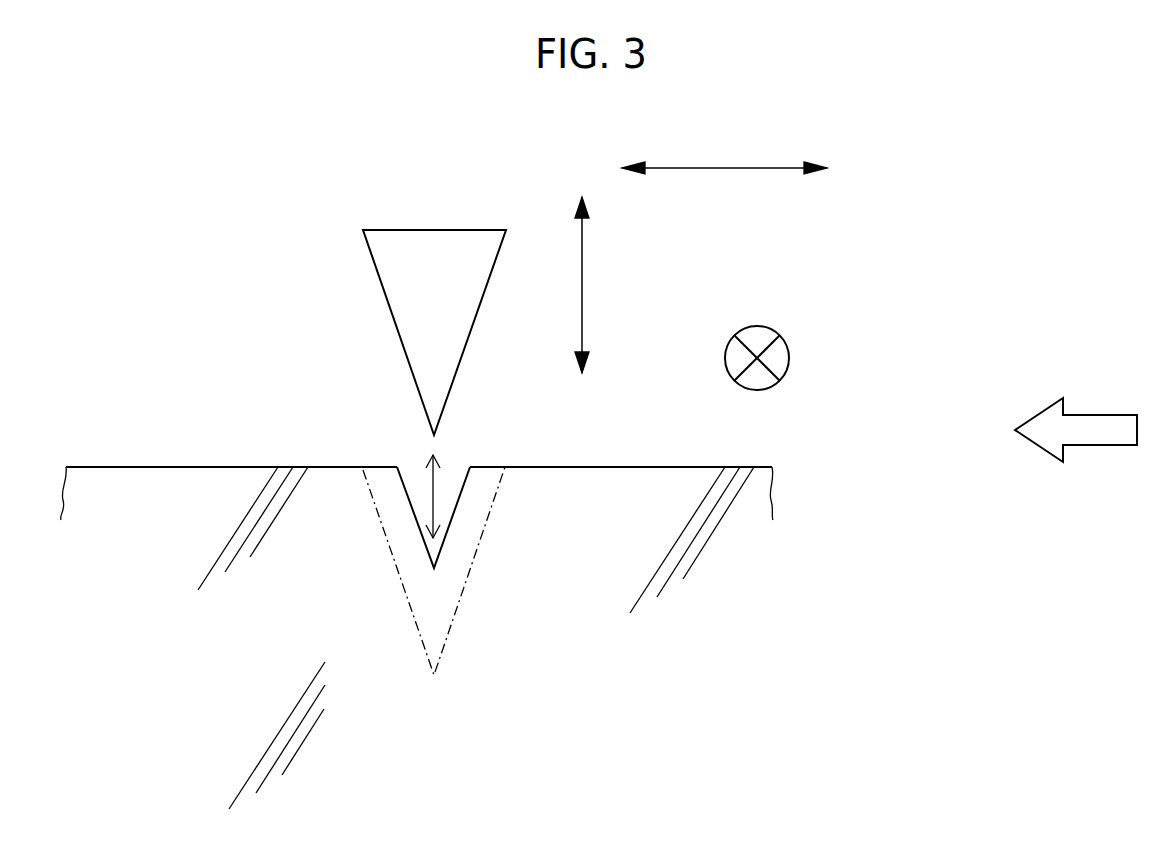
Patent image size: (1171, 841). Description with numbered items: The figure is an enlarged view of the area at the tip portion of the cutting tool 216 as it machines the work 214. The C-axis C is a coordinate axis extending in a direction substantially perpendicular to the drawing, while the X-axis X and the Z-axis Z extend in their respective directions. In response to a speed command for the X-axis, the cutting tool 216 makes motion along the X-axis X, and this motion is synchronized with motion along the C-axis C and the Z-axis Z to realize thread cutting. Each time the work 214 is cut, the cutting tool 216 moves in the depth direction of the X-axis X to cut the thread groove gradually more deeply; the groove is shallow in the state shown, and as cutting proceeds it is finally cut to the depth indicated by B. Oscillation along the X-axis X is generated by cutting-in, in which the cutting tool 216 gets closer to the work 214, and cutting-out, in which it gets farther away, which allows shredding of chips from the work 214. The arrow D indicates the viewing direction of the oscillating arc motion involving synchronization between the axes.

The work 214 is at (340, 467).
The cutting tool 216 is at (385, 293).
The final depth of the thread groove B is at (463, 592).
The arrow D is at (1089, 415).
The X-axis X is at (582, 296).
The Z-axis Z is at (695, 166).
The C-axis C is at (823, 358).